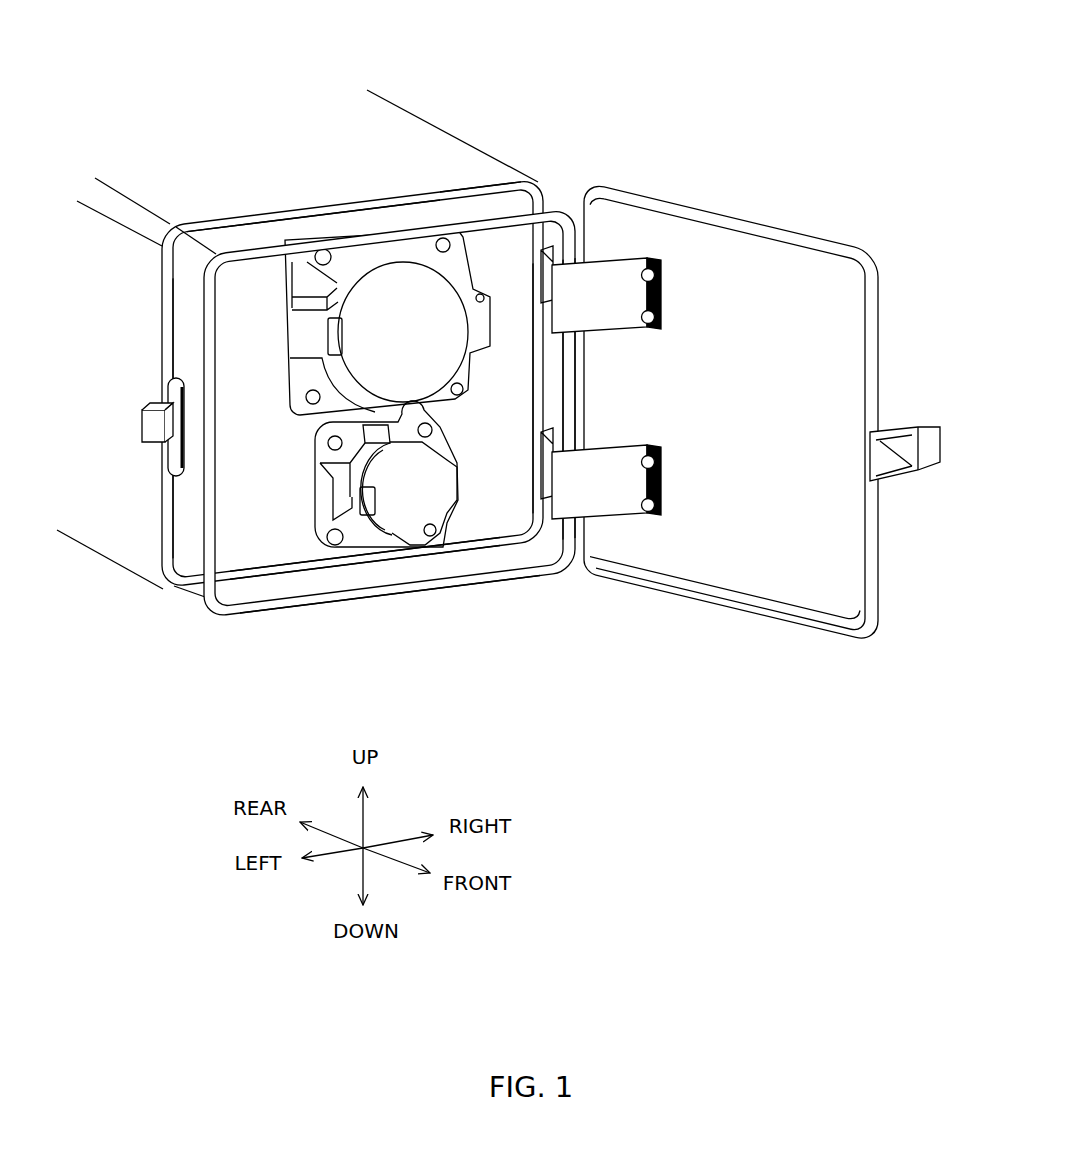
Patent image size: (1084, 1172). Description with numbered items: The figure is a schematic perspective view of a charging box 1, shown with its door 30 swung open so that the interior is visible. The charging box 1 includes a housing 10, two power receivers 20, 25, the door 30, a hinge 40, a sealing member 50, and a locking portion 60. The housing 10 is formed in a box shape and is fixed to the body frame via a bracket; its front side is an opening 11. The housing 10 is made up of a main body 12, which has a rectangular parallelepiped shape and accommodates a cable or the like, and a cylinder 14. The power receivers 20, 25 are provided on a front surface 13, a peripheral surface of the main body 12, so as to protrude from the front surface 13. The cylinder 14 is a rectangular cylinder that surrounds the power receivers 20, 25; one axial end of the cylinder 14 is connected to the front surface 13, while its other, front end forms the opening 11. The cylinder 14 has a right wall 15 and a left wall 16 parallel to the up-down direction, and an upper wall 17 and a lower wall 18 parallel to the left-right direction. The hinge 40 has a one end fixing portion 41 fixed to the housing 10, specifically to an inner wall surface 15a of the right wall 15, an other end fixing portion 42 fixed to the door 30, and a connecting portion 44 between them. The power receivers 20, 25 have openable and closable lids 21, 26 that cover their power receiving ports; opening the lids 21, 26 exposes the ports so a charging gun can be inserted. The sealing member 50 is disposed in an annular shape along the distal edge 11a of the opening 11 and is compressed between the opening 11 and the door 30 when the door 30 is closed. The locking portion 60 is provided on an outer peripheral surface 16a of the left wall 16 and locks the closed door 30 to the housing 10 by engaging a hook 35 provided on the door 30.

The charging box 1 is at (507, 37).
The housing 10 is at (452, 133).
The opening 11 is at (337, 581).
The edge 11a is at (576, 397).
The main body 12 is at (487, 168).
The front surface 13 is at (478, 533).
The cylinder 14 is at (348, 222).
The right wall 15 is at (556, 367).
The inner wall surface 15a is at (533, 405).
The left wall 16 is at (197, 490).
The outer peripheral surface 16a is at (175, 513).
The upper wall 17 is at (236, 235).
The lower wall 18 is at (272, 583).
The power receiver 20 is at (331, 283).
The lid 21 is at (473, 351).
The power receiver 25 is at (333, 455).
The lid 26 is at (458, 489).
The door 30 is at (748, 228).
The hook 35 is at (907, 483).
The hinge 40 is at (594, 390).
The one end fixing portion 41 is at (540, 256).
The other end fixing portion 42 is at (661, 298).
The connecting portion 44 is at (601, 272).
The sealing member 50 is at (388, 589).
The locking portion 60 is at (148, 425).